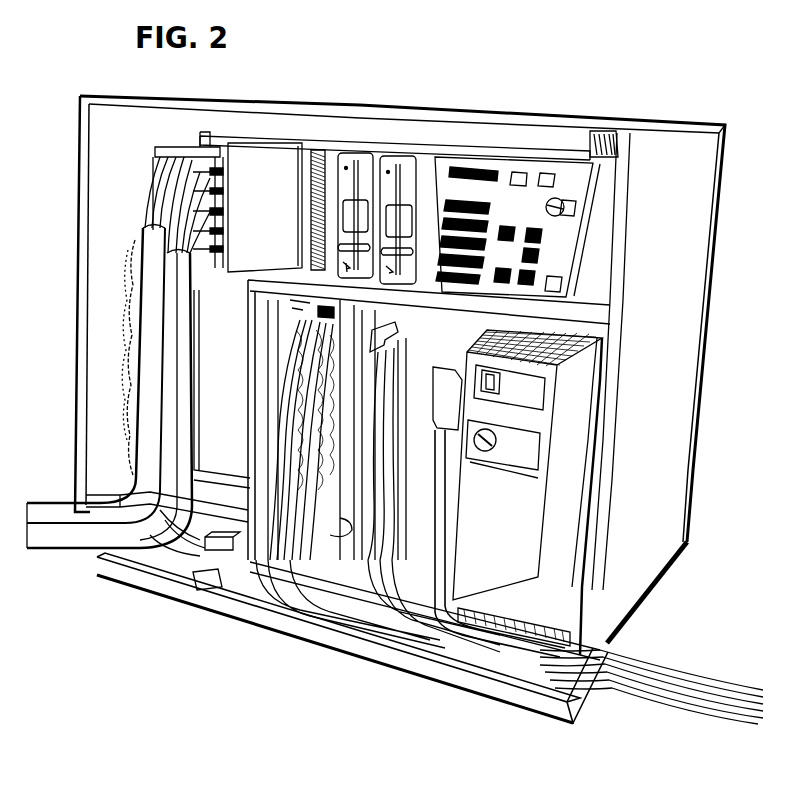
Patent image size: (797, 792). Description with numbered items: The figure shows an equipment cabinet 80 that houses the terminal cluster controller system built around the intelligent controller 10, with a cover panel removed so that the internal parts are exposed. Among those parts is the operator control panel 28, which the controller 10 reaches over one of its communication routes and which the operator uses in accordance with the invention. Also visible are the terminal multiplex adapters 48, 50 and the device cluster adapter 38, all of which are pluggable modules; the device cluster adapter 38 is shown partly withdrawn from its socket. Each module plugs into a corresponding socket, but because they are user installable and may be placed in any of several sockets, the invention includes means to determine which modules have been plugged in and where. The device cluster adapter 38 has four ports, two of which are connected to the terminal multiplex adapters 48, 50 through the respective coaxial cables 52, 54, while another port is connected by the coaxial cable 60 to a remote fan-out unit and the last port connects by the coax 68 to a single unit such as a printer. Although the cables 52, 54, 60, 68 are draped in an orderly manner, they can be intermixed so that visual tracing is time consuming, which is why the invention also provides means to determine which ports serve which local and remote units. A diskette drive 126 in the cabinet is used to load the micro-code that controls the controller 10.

The intelligent controller 10 is at (510, 527).
The operator control panel 28 is at (563, 247).
The device cluster adapter 38 is at (438, 378).
The terminal multiplex adapter 48 is at (318, 313).
The terminal multiplex adapter 50 is at (322, 316).
The coaxial cable 52 is at (352, 500).
The coaxial cable 54 is at (330, 540).
The coaxial cable 60 is at (675, 653).
The coax 68 is at (743, 718).
The equipment cabinet 80 is at (690, 367).
The diskette drive 126 is at (357, 165).